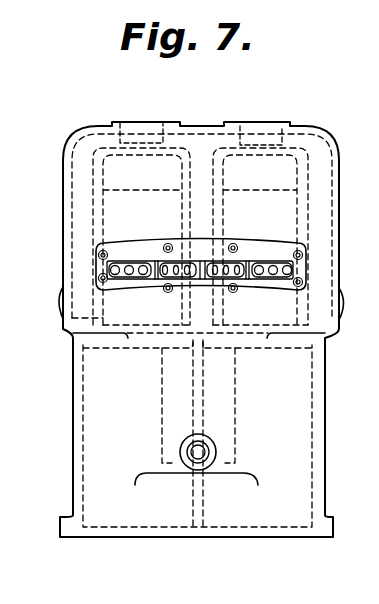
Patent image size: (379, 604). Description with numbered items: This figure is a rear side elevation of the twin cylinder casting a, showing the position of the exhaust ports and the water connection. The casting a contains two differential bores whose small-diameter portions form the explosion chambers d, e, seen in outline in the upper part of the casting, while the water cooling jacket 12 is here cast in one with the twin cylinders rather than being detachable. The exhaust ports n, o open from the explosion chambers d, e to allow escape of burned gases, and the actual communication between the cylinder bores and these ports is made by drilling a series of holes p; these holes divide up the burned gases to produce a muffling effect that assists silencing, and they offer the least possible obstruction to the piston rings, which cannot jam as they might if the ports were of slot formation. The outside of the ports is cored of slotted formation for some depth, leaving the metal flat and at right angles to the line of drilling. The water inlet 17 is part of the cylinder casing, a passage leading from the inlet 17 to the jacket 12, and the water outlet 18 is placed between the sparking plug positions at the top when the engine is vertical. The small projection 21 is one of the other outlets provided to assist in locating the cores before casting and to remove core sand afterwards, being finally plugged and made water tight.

The water cooling jacket 12 is at (63, 192).
The water outlet 18 is at (196, 126).
The explosion chamber d is at (111, 176).
The explosion chamber e is at (294, 171).
The exhaust port o is at (102, 246).
The exhaust port n is at (270, 262).
The holes p is at (142, 271).
The outlet 21 is at (59, 289).
The twin cylinder casting a is at (73, 428).
The water inlet 17 is at (207, 452).